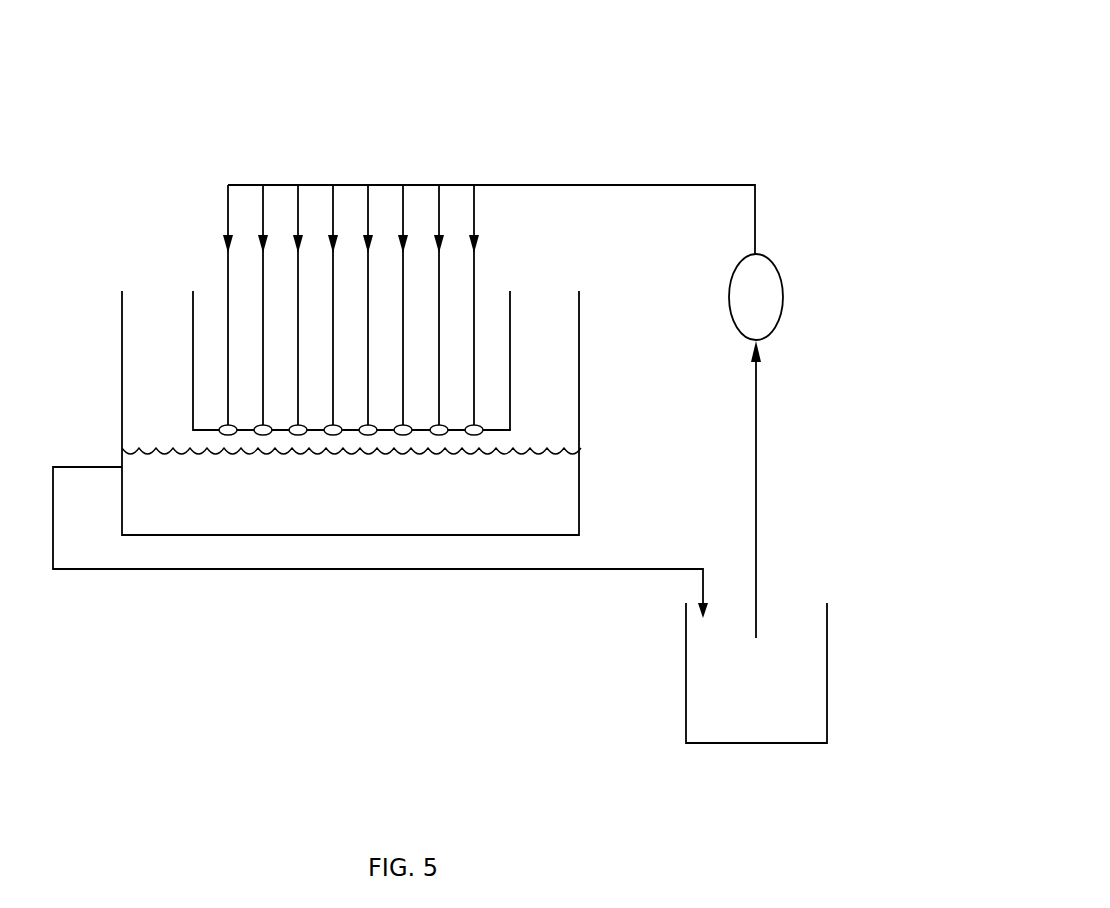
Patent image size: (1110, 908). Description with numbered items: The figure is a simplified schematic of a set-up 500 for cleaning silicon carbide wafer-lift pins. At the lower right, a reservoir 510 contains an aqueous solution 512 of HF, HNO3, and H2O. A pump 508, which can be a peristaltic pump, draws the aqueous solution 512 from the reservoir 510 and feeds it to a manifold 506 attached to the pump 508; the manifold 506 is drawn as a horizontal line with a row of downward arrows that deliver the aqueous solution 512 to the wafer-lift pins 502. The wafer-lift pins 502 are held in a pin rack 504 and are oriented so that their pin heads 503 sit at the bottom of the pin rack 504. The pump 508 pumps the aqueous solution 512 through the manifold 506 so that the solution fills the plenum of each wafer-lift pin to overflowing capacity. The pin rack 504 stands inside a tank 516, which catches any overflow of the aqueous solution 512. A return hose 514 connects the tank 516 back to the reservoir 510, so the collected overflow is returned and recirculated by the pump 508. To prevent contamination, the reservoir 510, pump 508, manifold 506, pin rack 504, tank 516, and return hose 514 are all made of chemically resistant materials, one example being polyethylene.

The set-up 500 is at (686, 83).
The wafer-lift pins 502 is at (263, 325).
The pin heads 503 is at (229, 437).
The pin rack 504 is at (193, 357).
The manifold 506 is at (650, 185).
The pump 508 is at (781, 262).
The reservoir 510 is at (827, 630).
The aqueous solution 512 is at (757, 690).
The return hose 514 is at (122, 573).
The tank 516 is at (579, 390).